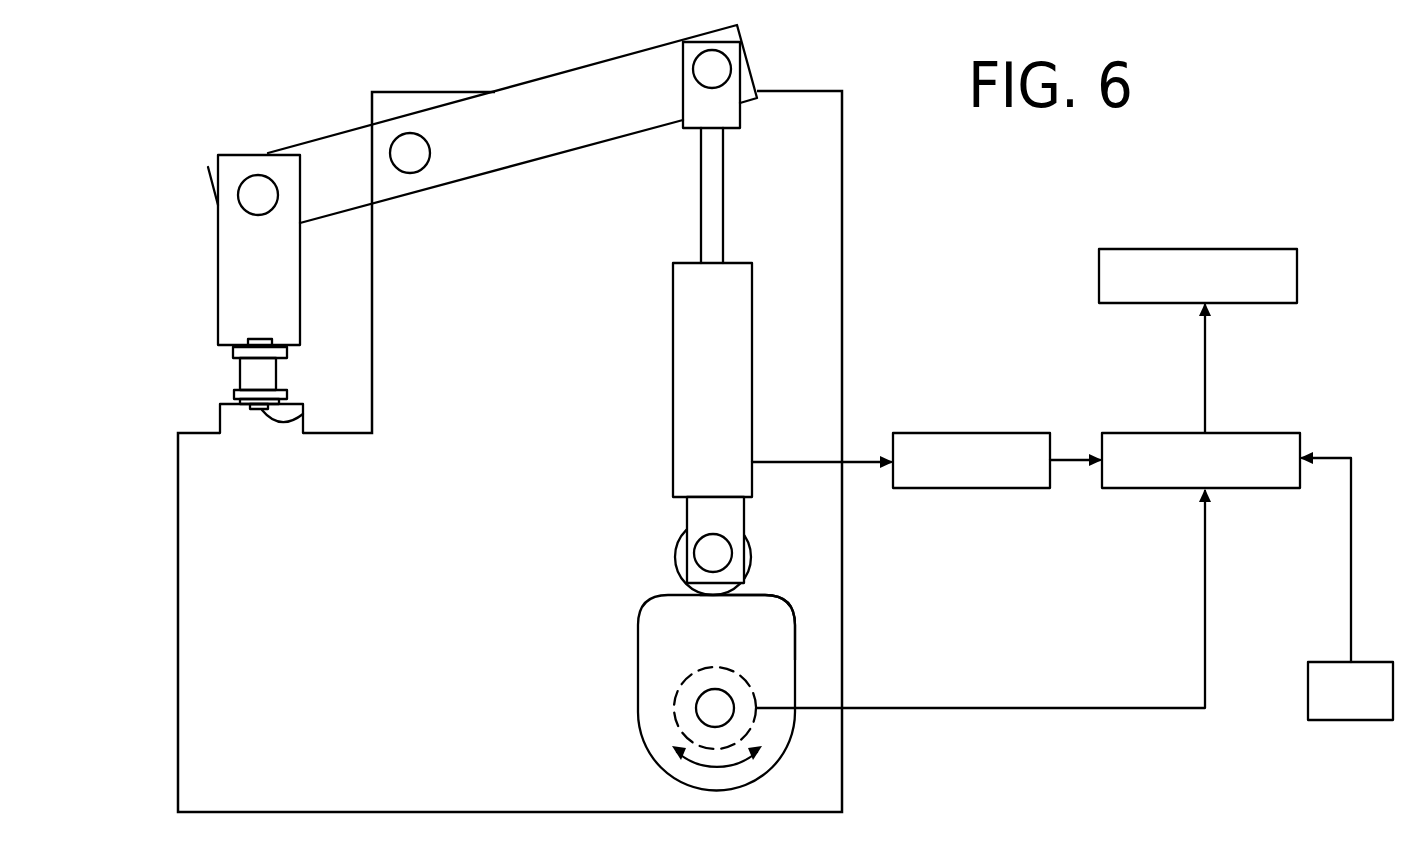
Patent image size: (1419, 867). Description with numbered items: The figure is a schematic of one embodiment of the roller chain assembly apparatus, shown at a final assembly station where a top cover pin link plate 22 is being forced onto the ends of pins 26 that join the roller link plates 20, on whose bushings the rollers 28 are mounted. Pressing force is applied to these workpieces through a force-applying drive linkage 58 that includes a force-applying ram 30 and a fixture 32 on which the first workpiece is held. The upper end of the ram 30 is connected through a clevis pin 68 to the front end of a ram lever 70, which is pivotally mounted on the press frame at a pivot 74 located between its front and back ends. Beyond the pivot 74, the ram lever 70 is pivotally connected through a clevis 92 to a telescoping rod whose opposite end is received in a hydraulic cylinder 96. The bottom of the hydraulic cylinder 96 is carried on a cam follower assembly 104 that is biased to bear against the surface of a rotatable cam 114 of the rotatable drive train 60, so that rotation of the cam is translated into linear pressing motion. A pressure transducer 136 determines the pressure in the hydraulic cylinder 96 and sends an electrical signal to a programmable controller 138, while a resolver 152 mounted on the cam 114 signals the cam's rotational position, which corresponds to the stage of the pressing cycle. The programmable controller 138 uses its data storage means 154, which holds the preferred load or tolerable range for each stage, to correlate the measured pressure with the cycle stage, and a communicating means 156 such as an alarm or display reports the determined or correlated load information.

The roller link plate 20 is at (278, 391).
The pin link plate 22 is at (242, 348).
The pins 26 is at (262, 338).
The rollers 28 is at (248, 368).
The force-applying ram 30 is at (235, 278).
The fixture 32 is at (228, 418).
The force-applying drive linkage 58 is at (700, 205).
The rotatable drive train 60 is at (659, 639).
The clevis pin 68 is at (248, 193).
The ram lever 70 is at (508, 88).
The pivot 74 is at (420, 160).
The clevis 92 is at (720, 103).
The hydraulic cylinder 96 is at (697, 382).
The cam follower assembly 104 is at (677, 538).
The rotatable cam 114 is at (758, 618).
The pressure transducer 136 is at (988, 488).
The programmable controller 138 is at (1300, 437).
The resolver 152 is at (685, 713).
The data storage means 154 is at (1327, 708).
The communicating means 156 is at (1283, 284).